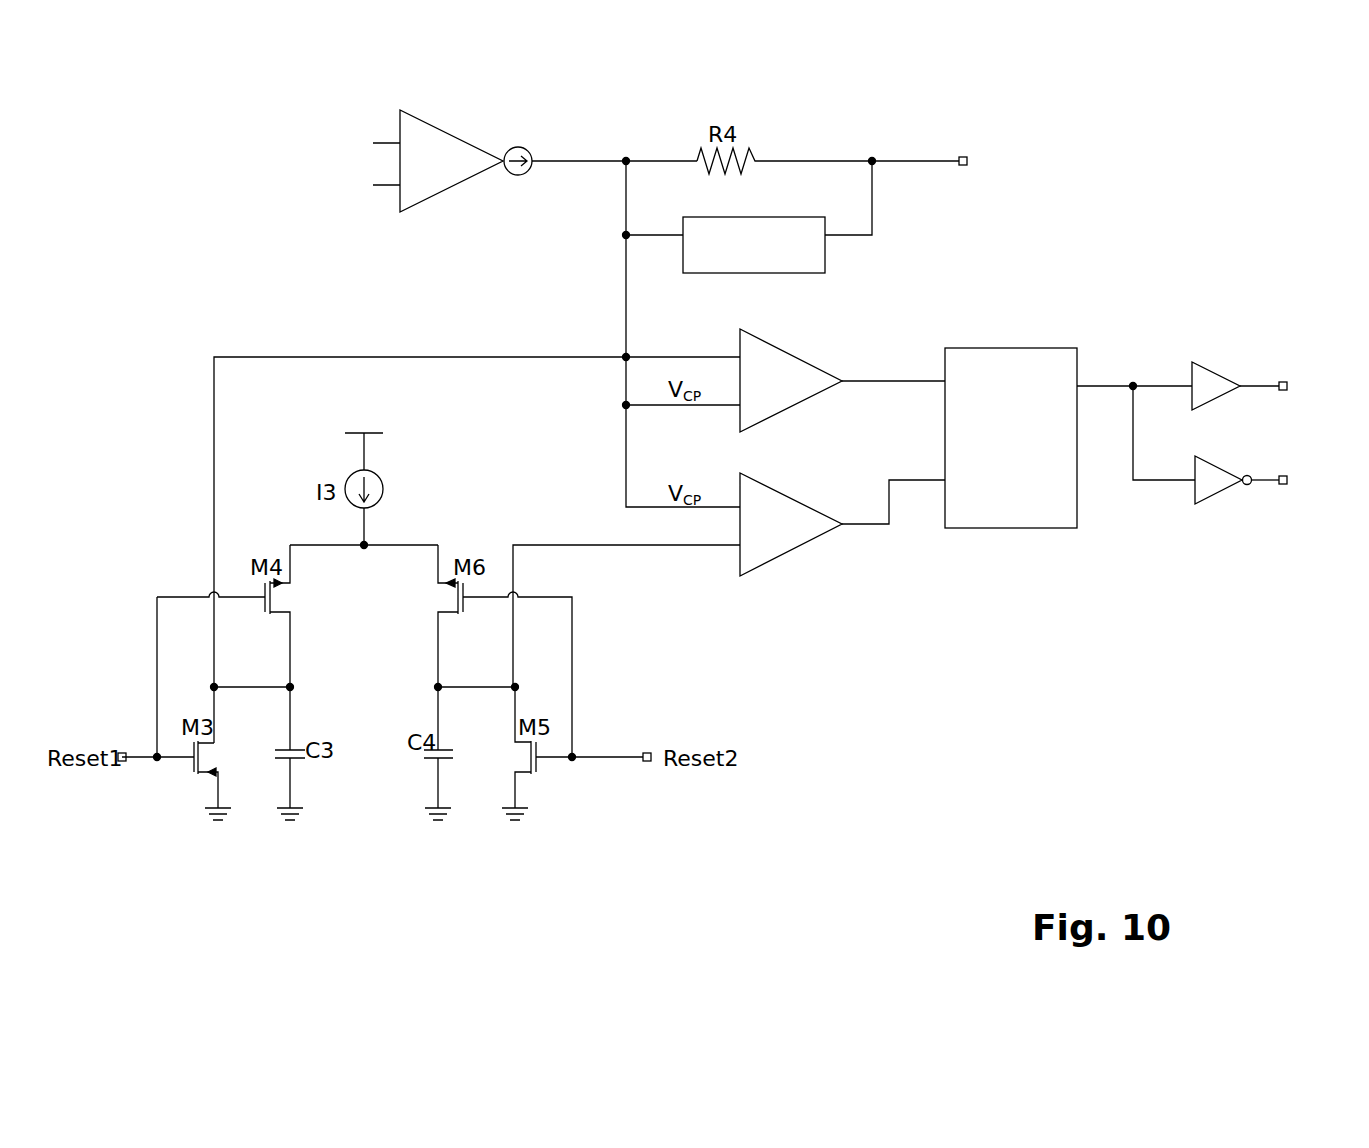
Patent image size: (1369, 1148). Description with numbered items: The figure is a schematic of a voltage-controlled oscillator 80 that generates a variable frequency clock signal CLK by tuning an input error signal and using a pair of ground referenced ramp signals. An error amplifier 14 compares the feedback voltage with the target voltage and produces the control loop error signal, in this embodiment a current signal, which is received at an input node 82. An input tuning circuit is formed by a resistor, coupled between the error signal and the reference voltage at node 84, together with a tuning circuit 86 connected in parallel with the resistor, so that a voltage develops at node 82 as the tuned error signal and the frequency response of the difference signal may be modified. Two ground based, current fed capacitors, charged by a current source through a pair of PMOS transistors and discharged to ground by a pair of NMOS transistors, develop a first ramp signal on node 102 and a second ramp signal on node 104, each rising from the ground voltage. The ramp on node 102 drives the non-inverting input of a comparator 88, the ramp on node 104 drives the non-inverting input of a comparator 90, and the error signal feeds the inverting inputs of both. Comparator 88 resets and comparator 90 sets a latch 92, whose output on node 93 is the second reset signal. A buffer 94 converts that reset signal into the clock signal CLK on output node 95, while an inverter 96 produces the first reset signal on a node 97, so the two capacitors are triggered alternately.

The error amplifier 14 is at (445, 190).
The voltage-controlled oscillator 80 is at (1140, 98).
The input node 82 is at (627, 158).
The reference voltage node 84 is at (903, 158).
The tuning circuit 86 is at (795, 273).
The comparator 88 is at (768, 420).
The comparator 90 is at (768, 564).
The latch 92 is at (1022, 348).
The latch output node 93 is at (1107, 388).
The buffer 94 is at (1205, 365).
The output node 95 is at (1250, 385).
The inverter 96 is at (1208, 498).
The reset signal node 97 is at (1265, 478).
The ramp signal node 102 is at (439, 357).
The ramp signal node 104 is at (548, 545).